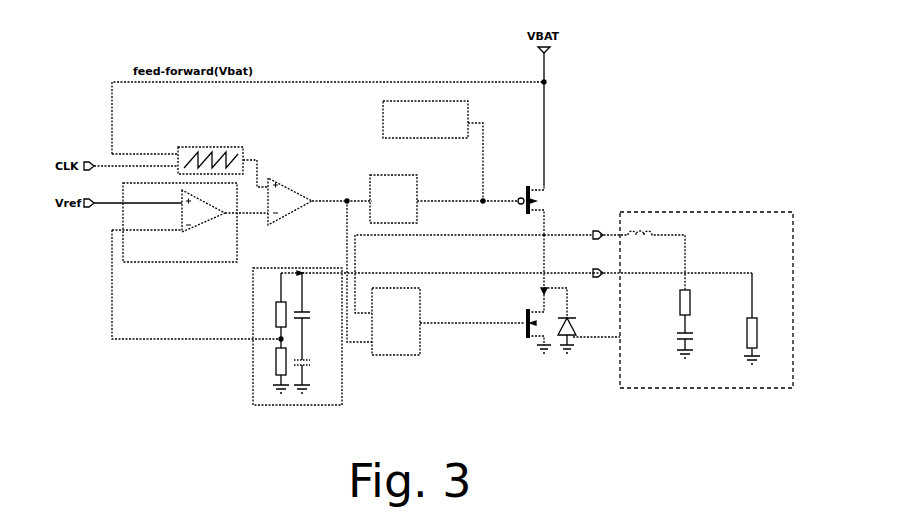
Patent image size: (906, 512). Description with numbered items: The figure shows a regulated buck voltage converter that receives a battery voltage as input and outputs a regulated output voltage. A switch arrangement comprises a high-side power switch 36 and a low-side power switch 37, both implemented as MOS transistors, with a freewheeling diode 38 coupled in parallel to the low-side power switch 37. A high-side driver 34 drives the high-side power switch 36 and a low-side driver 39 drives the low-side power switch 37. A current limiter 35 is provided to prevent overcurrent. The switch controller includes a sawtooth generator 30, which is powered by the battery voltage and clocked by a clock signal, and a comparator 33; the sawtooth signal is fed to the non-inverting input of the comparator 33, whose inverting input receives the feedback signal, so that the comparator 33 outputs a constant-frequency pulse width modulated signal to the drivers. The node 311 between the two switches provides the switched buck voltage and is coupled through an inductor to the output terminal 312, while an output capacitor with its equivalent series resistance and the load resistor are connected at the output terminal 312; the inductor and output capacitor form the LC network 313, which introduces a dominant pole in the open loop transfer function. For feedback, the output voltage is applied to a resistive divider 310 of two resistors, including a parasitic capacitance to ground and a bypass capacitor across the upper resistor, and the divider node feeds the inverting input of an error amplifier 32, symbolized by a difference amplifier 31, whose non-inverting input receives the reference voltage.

The sawtooth generator 30 is at (243, 153).
The difference amplifier 31 is at (210, 222).
The error amplifier 32 is at (196, 261).
The comparator 33 is at (288, 215).
The high-side driver 34 is at (392, 175).
The current limiter 35 is at (468, 112).
The high-side power switch 36 is at (533, 186).
The low-side power switch 37 is at (537, 337).
The freewheeling diode 38 is at (573, 337).
The low-side driver 39 is at (420, 311).
The resistive divider 310 is at (253, 373).
The node 311 is at (544, 235).
The output terminal 312 is at (600, 273).
The LC network 313 is at (681, 212).